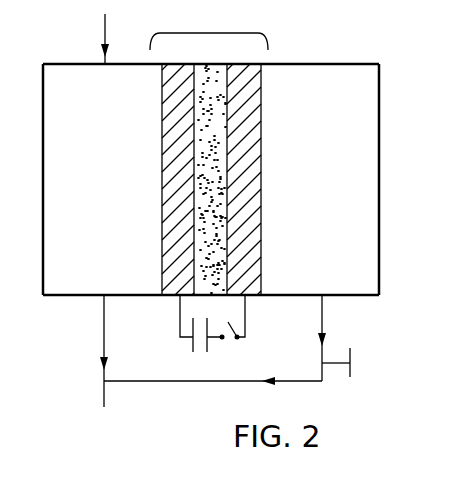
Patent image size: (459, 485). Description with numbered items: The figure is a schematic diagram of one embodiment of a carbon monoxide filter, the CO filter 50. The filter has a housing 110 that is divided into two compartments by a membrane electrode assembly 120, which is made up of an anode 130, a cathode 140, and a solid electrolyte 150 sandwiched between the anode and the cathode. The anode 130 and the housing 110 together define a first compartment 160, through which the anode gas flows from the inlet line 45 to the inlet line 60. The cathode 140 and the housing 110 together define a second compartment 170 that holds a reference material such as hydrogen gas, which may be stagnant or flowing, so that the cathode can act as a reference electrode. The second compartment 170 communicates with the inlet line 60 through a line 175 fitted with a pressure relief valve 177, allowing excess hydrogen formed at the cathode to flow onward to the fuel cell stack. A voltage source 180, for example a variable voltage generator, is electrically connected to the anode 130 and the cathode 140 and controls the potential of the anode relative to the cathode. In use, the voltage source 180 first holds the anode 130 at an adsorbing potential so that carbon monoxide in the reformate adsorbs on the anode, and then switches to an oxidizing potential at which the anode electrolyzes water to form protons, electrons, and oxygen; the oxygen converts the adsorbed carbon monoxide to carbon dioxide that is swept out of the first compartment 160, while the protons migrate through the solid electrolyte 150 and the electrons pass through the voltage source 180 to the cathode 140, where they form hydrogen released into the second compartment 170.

The inlet line 45 is at (104, 31).
The CO filter 50 is at (353, 46).
The inlet line 60 is at (104, 331).
The housing 110 is at (382, 173).
The membrane electrode assembly 120 is at (210, 33).
The anode 130 is at (167, 283).
The cathode 140 is at (253, 285).
The solid electrolyte 150 is at (213, 89).
The first compartment 160 is at (57, 204).
The second compartment 170 is at (372, 97).
The line 175 is at (323, 326).
The pressure relief valve 177 is at (337, 365).
The voltage source 180 is at (178, 352).